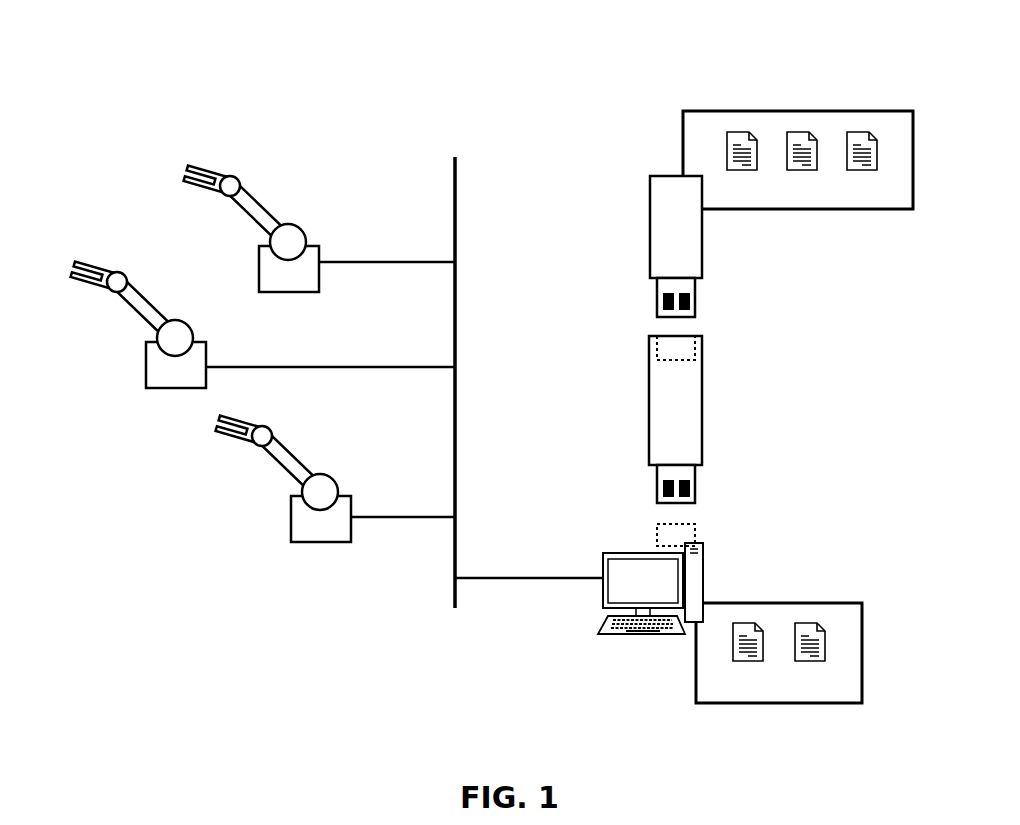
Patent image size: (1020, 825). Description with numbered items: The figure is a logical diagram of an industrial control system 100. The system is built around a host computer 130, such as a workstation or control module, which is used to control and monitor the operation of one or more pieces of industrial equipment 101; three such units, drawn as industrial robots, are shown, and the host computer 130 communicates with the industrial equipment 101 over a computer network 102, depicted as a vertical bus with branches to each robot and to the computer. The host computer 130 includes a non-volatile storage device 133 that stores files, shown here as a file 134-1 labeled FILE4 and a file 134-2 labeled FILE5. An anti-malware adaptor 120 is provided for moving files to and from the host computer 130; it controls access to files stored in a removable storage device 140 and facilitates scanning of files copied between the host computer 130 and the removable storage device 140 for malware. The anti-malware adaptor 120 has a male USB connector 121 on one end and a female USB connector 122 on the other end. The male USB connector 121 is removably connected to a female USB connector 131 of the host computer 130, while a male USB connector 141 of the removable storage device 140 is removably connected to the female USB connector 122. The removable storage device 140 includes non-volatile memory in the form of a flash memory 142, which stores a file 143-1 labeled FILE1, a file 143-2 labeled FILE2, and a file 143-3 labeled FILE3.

The industrial control system 100 is at (328, 58).
The industrial equipment 101 is at (283, 212).
The computer network 102 is at (451, 170).
The anti-malware adaptor 120 is at (618, 419).
The male USB connector 121 is at (657, 478).
The female USB connector 122 is at (656, 352).
The host computer 130 is at (615, 604).
The female USB connector 131 is at (655, 535).
The non-volatile storage device 133 is at (791, 656).
The file 134-1 is at (743, 612).
The file 134-2 is at (818, 622).
The removable storage device 140 is at (738, 186).
The male USB connector 141 is at (657, 297).
The flash memory 142 is at (869, 211).
The file 143-1 is at (736, 125).
The file 143-2 is at (800, 118).
The file 143-3 is at (862, 118).